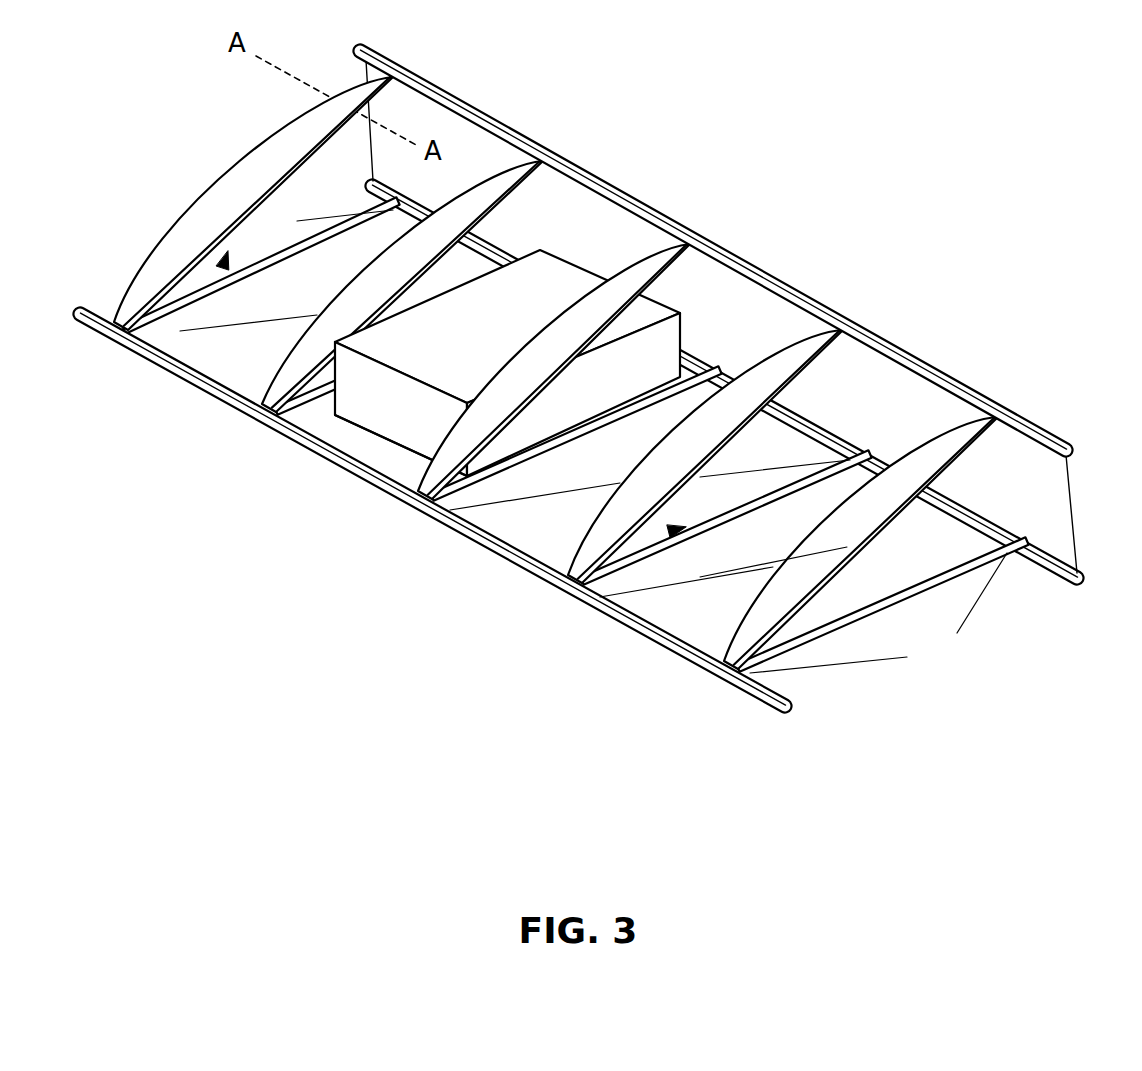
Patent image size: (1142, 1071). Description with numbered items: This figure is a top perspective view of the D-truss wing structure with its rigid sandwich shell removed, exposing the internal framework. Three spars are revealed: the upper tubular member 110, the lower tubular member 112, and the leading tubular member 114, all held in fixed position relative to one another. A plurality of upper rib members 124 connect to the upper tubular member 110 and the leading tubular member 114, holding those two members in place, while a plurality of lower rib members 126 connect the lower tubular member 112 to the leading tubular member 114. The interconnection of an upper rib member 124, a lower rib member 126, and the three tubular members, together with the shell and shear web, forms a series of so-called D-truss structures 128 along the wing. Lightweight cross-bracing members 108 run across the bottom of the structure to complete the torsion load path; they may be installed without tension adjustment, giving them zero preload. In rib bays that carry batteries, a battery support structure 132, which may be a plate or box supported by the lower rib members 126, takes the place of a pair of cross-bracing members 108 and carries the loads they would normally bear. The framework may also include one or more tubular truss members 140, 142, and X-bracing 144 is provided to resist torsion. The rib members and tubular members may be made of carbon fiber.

The lightweight cross-bracing members 108 is at (906, 658).
The upper tubular member 110 is at (1074, 450).
The lower tubular member 112 is at (1080, 582).
The leading tubular member 114 is at (778, 718).
The upper rib members 124 is at (197, 204).
The lower rib members 126 is at (917, 612).
The D-truss structures 128 is at (278, 229).
The battery support structure 132 is at (537, 314).
The tubular truss member 140 is at (224, 265).
The tubular truss member 142 is at (672, 530).
The X-bracing 144 is at (357, 477).